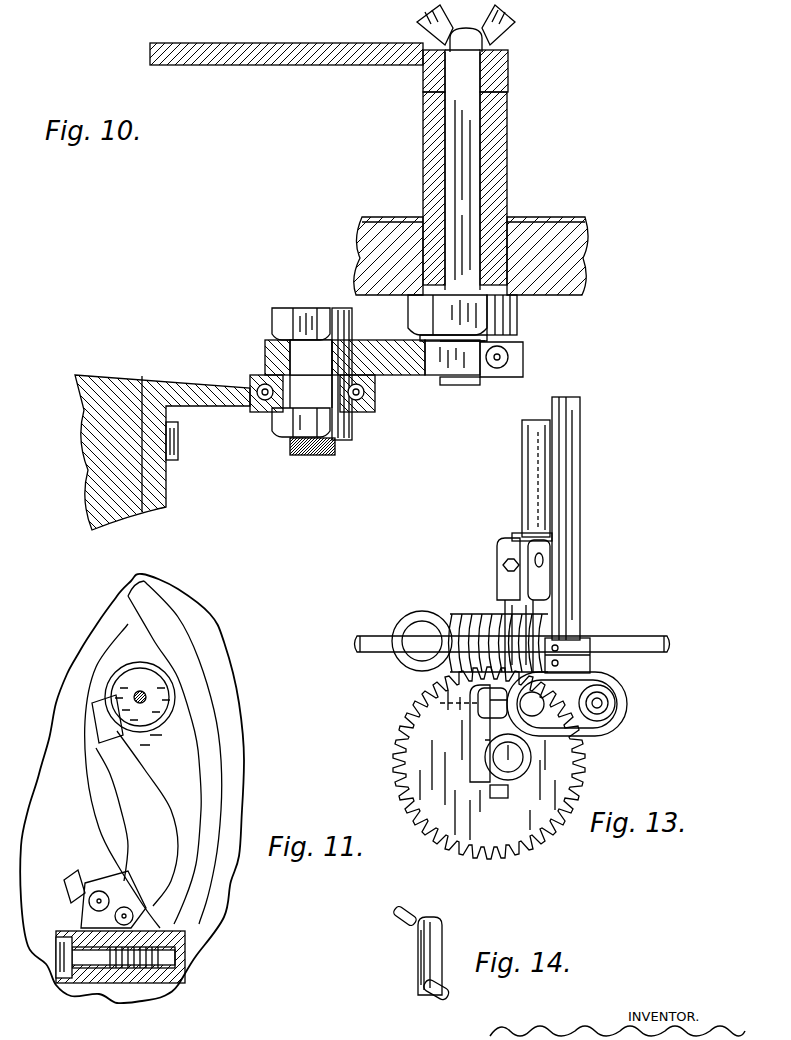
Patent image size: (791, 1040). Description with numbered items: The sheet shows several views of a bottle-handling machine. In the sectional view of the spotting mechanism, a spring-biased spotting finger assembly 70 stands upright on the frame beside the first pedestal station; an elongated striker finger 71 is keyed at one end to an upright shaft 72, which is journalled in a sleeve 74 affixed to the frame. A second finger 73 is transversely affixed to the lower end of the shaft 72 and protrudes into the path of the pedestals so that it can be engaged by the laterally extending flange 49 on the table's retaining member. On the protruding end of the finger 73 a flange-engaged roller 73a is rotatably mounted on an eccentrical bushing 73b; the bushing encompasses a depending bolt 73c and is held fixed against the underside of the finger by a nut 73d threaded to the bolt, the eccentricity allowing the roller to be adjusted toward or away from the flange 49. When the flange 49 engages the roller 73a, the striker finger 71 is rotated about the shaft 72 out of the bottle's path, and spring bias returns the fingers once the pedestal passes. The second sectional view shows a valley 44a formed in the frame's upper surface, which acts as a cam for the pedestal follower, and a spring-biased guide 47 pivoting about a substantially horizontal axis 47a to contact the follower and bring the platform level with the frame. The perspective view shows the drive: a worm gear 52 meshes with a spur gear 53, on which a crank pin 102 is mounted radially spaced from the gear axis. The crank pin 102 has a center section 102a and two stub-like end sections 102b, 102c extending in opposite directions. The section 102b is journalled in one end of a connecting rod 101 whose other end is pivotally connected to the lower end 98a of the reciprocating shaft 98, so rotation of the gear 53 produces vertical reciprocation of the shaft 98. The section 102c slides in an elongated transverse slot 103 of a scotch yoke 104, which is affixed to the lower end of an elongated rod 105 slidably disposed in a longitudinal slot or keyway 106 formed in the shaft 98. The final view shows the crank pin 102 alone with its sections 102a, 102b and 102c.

In FIG. 10, the striker finger 71 is at (303, 50).
In FIG. 10, the spotting finger assembly 70 is at (527, 80).
In FIG. 10, the upright shaft 72 is at (472, 150).
In FIG. 10, the sleeve 74 is at (500, 193).
In FIG. 10, the second finger 73 is at (400, 375).
In FIG. 10, the flange-engaged roller 73a is at (372, 413).
In FIG. 10, the eccentrical bushing 73b is at (268, 413).
In FIG. 10, the depending bolt 73c is at (305, 310).
In FIG. 10, the nut 73d is at (350, 432).
In FIG. 10, the flange 49 is at (205, 378).
In FIG. 13, the reciprocating shaft 98 is at (527, 438).
In FIG. 13, the lower end of shaft 98a is at (526, 531).
In FIG. 13, the elongated rod 105 is at (573, 470).
In FIG. 13, the longitudinal slot 106 is at (538, 473).
In FIG. 13, the connecting rod 101 is at (505, 598).
In FIG. 13, the worm gear 52 is at (430, 618).
In FIG. 13, the spur gear 53 is at (470, 825).
In FIG. 13, the scotch yoke 104 is at (628, 718).
In FIG. 13, the transverse slot 103 is at (565, 722).
In FIG. 14, the crank pin 102 is at (453, 948).
In FIG. 14, the center section 102a is at (416, 955).
In FIG. 13, the stub-like end section 102b is at (425, 705).
In FIG. 14, the stub-like end section 102b is at (403, 915).
In FIG. 13, the stub-like end section 102c is at (612, 702).
In FIG. 14, the stub-like end section 102c is at (420, 994).
In FIG. 11, the spring-biased guide 47 is at (210, 757).
In FIG. 11, the horizontal axis 47a is at (178, 964).
In FIG. 11, the valley 44a is at (232, 790).